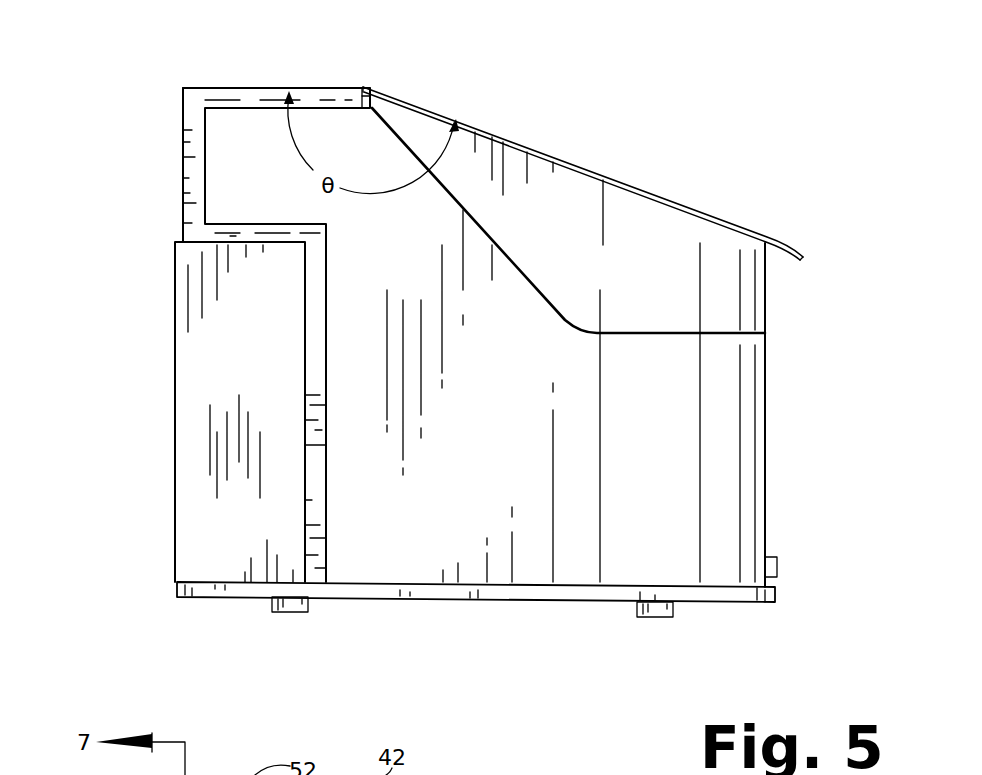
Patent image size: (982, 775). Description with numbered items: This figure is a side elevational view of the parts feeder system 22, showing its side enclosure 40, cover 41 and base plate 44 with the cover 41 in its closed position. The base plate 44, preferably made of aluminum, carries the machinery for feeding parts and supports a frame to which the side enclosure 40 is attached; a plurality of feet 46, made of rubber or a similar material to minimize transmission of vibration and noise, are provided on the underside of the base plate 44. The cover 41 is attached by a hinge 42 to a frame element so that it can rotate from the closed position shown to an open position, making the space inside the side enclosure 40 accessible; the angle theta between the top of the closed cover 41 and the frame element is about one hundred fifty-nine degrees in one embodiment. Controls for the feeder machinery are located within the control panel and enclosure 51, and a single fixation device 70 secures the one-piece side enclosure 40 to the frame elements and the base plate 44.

The parts feeder system 22 is at (128, 123).
The side enclosure 40 is at (489, 455).
The cover 41 is at (646, 190).
The hinge 42 is at (366, 89).
The base plate 44 is at (430, 600).
The feet 46 is at (290, 610).
The control panel and enclosure 51 is at (256, 376).
The fixation device 70 is at (779, 565).